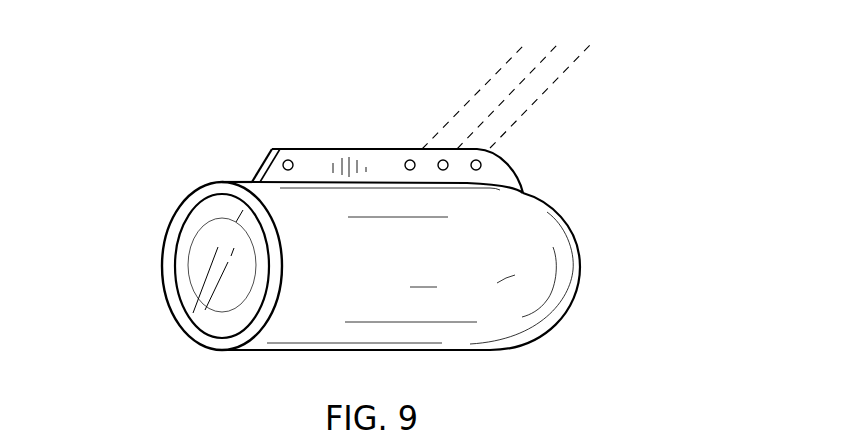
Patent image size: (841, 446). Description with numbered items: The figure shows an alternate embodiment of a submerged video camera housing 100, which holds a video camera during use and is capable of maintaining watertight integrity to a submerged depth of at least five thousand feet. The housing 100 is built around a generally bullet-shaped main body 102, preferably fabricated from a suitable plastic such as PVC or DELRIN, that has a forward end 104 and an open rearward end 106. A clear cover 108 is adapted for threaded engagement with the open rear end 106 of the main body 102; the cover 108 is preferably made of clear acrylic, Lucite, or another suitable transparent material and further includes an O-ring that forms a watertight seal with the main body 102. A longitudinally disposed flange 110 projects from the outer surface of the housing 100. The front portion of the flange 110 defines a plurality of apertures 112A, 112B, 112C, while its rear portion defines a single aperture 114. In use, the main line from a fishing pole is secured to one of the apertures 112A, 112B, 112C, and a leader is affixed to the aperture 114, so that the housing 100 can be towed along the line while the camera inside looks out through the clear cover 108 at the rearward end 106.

The video camera housing 100 is at (662, 172).
The main body 102 is at (403, 351).
The forward end 104 is at (578, 267).
The open rearward end 106 is at (210, 325).
The clear cover 108 is at (207, 242).
The flange 110 is at (312, 148).
The aperture 112A is at (407, 160).
The aperture 112B is at (447, 161).
The aperture 112C is at (483, 164).
The aperture 114 is at (265, 163).